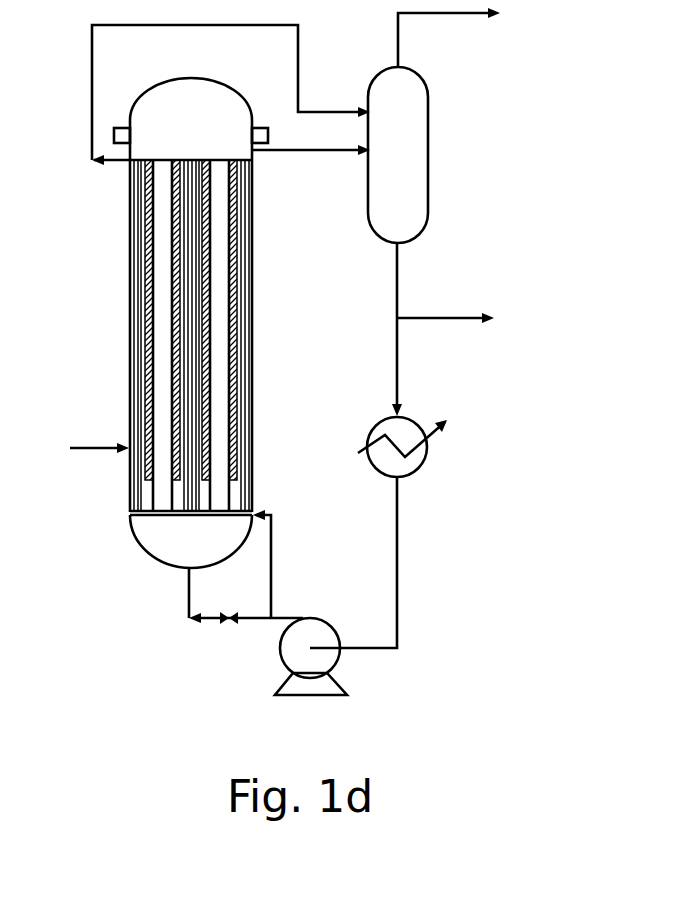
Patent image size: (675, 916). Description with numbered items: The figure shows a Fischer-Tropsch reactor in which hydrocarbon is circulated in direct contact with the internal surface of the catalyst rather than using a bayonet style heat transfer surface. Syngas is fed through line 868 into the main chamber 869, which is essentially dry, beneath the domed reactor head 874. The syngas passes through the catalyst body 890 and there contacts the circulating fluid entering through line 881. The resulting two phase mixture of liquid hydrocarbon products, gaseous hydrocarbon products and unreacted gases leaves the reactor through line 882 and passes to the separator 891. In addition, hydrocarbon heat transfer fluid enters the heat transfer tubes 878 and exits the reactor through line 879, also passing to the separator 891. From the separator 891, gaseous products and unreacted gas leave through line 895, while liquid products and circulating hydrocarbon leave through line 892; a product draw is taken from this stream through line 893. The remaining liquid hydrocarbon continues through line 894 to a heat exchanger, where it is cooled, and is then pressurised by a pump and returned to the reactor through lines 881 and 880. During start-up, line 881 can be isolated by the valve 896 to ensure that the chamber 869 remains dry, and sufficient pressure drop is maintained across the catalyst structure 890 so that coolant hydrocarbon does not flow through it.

The reactor head 874 is at (152, 92).
The line 879 is at (112, 166).
The main chamber 869 is at (130, 278).
The line 868 is at (97, 447).
The line 882 is at (285, 150).
The catalyst body 890 is at (240, 251).
The heat transfer tubes 878 is at (245, 323).
The line 880 is at (258, 508).
The line 881 is at (186, 582).
The valve 896 is at (228, 626).
The separator 891 is at (428, 145).
The line 892 is at (397, 292).
The line 893 is at (470, 316).
The line to heat exchanger 894 is at (400, 360).
The line 895 is at (472, 15).